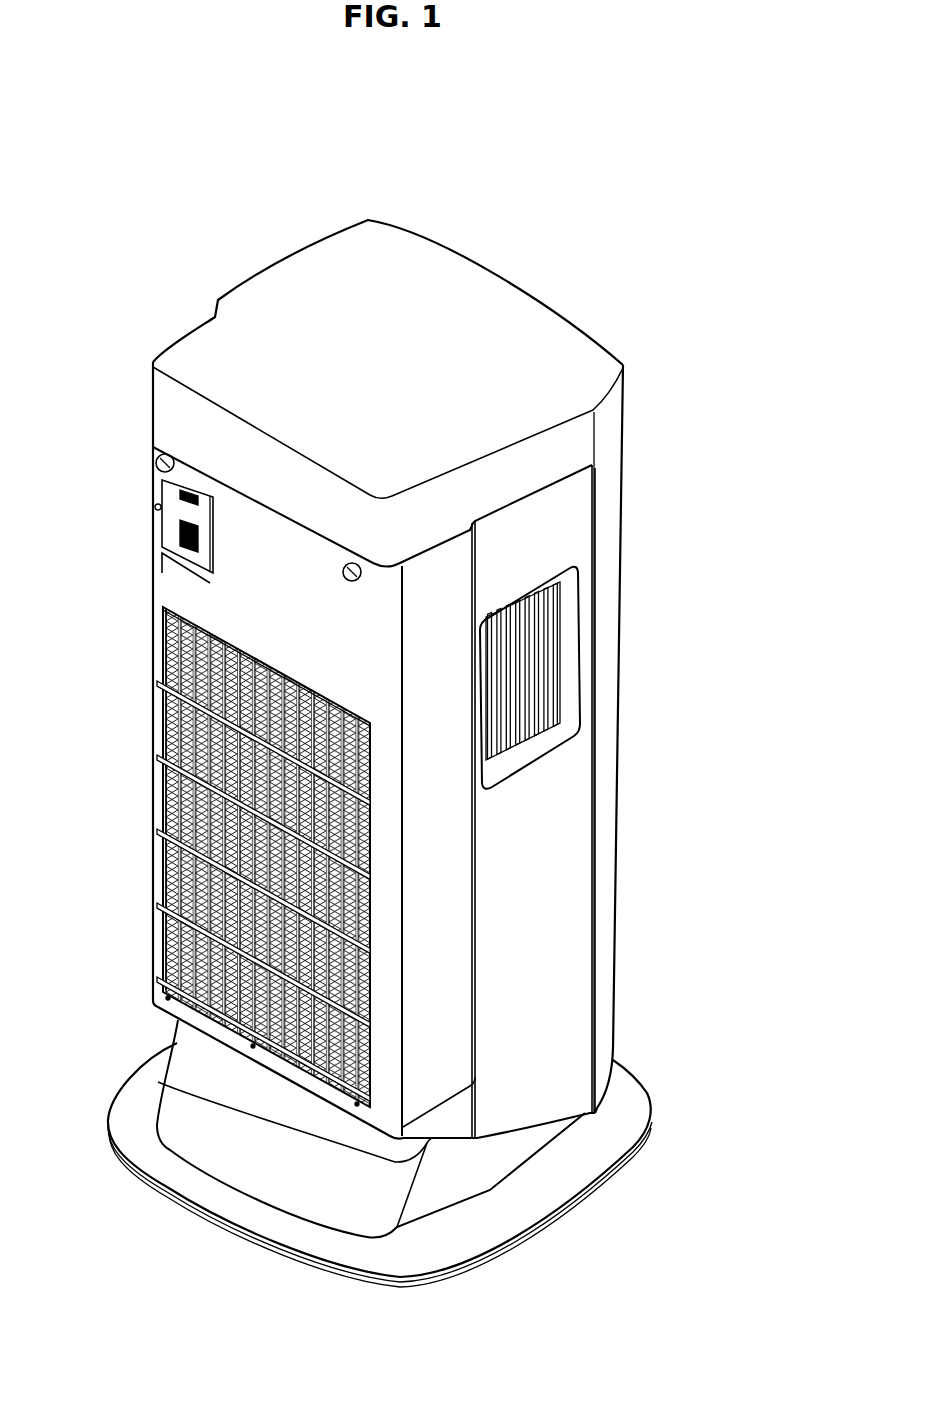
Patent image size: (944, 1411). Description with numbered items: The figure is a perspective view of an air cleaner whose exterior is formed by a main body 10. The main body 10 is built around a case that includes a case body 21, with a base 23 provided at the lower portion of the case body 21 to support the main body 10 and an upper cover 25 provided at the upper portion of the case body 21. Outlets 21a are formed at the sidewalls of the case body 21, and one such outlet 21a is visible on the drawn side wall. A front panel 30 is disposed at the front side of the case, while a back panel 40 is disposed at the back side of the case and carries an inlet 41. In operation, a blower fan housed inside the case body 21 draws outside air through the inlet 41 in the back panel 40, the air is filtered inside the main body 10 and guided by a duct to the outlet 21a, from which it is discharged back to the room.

The main body 10 is at (368, 216).
The upper cover 25 is at (503, 300).
The front panel 30 is at (610, 515).
The case body 21 is at (572, 878).
The outlet 21a is at (542, 665).
The base 23 is at (630, 1115).
The back panel 40 is at (195, 597).
The inlet 41 is at (185, 797).